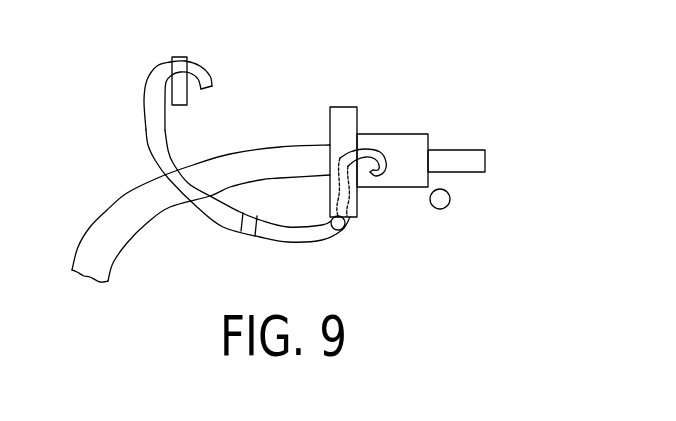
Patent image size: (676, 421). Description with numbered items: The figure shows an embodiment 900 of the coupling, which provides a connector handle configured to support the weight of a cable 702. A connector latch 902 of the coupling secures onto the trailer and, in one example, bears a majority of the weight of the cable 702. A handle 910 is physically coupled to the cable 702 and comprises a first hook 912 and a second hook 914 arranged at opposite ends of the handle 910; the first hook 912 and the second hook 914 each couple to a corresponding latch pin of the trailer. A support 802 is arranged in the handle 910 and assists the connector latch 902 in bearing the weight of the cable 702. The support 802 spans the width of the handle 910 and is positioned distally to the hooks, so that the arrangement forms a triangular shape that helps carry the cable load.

The embodiment of the coupling 900 is at (508, 71).
The cable 702 is at (128, 192).
The handle 910 is at (206, 215).
The first hook 912 is at (152, 74).
The support 802 is at (248, 230).
The connector latch 902 is at (400, 188).
The second hook 914 is at (372, 150).